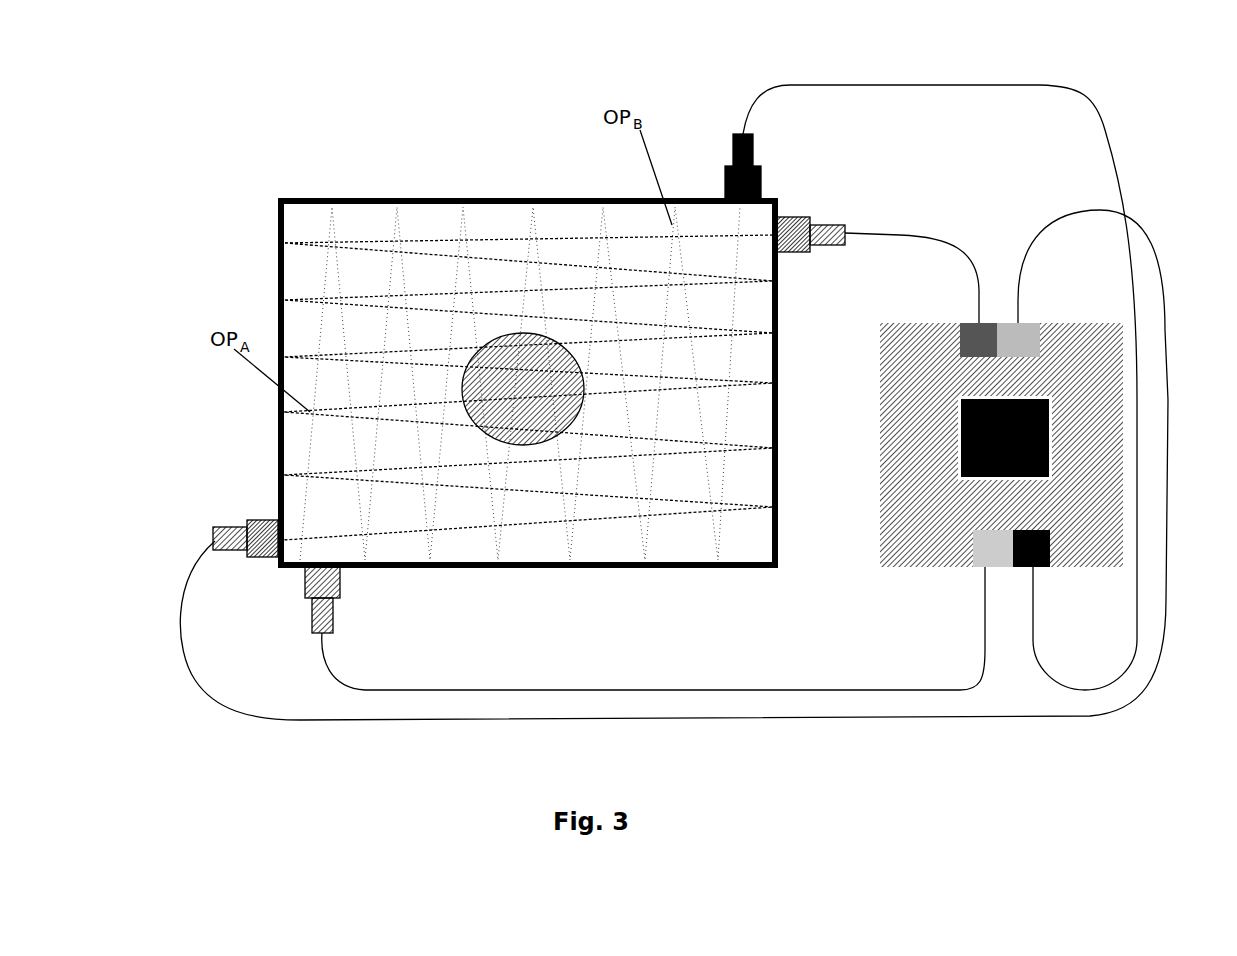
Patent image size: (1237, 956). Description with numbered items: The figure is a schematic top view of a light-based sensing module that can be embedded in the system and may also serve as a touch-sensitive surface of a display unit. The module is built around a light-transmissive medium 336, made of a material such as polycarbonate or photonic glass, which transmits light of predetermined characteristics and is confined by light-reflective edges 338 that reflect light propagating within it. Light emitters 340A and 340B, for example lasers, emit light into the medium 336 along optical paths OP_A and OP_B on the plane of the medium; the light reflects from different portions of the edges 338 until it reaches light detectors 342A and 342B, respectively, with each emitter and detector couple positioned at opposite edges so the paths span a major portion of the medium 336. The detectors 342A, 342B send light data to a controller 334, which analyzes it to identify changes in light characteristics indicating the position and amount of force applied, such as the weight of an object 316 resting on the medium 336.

The object 316 is at (512, 363).
The controller 334 is at (1050, 478).
The light-transmissive medium 336 is at (366, 326).
The light-reflective edges 338 is at (375, 198).
The light emitter 340A is at (803, 217).
The light emitter 340B is at (333, 600).
The light detector 342A is at (250, 555).
The light detector 342B is at (734, 165).